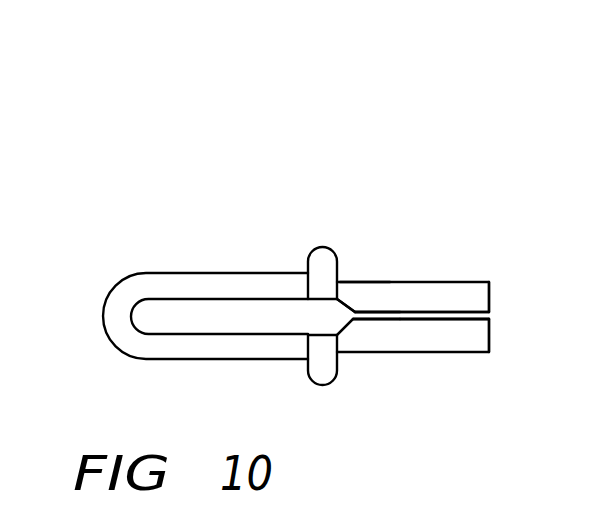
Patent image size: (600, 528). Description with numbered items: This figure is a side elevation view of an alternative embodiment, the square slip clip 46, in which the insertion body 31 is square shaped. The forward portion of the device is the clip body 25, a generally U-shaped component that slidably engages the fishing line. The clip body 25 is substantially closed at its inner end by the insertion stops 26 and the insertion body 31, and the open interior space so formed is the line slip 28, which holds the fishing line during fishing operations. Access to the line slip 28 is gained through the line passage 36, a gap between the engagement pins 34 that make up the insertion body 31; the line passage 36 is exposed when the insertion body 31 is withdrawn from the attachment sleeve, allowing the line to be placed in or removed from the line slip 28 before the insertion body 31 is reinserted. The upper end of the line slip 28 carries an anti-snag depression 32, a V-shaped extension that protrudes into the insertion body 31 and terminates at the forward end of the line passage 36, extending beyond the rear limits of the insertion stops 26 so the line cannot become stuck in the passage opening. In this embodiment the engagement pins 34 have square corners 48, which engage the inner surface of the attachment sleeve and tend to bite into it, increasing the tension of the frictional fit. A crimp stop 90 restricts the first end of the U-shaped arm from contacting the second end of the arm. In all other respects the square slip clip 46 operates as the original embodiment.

The clip body 25 is at (192, 260).
The insertion stops 26 is at (317, 245).
The line slip 28 is at (148, 300).
The insertion body 31 is at (435, 277).
The anti-snag depression 32 is at (340, 317).
The engagement pins 34 is at (405, 300).
The line passage 36 is at (447, 320).
The square slip clip 46 is at (365, 235).
The square corners 48 is at (472, 347).
The crimp stop 90 is at (363, 310).